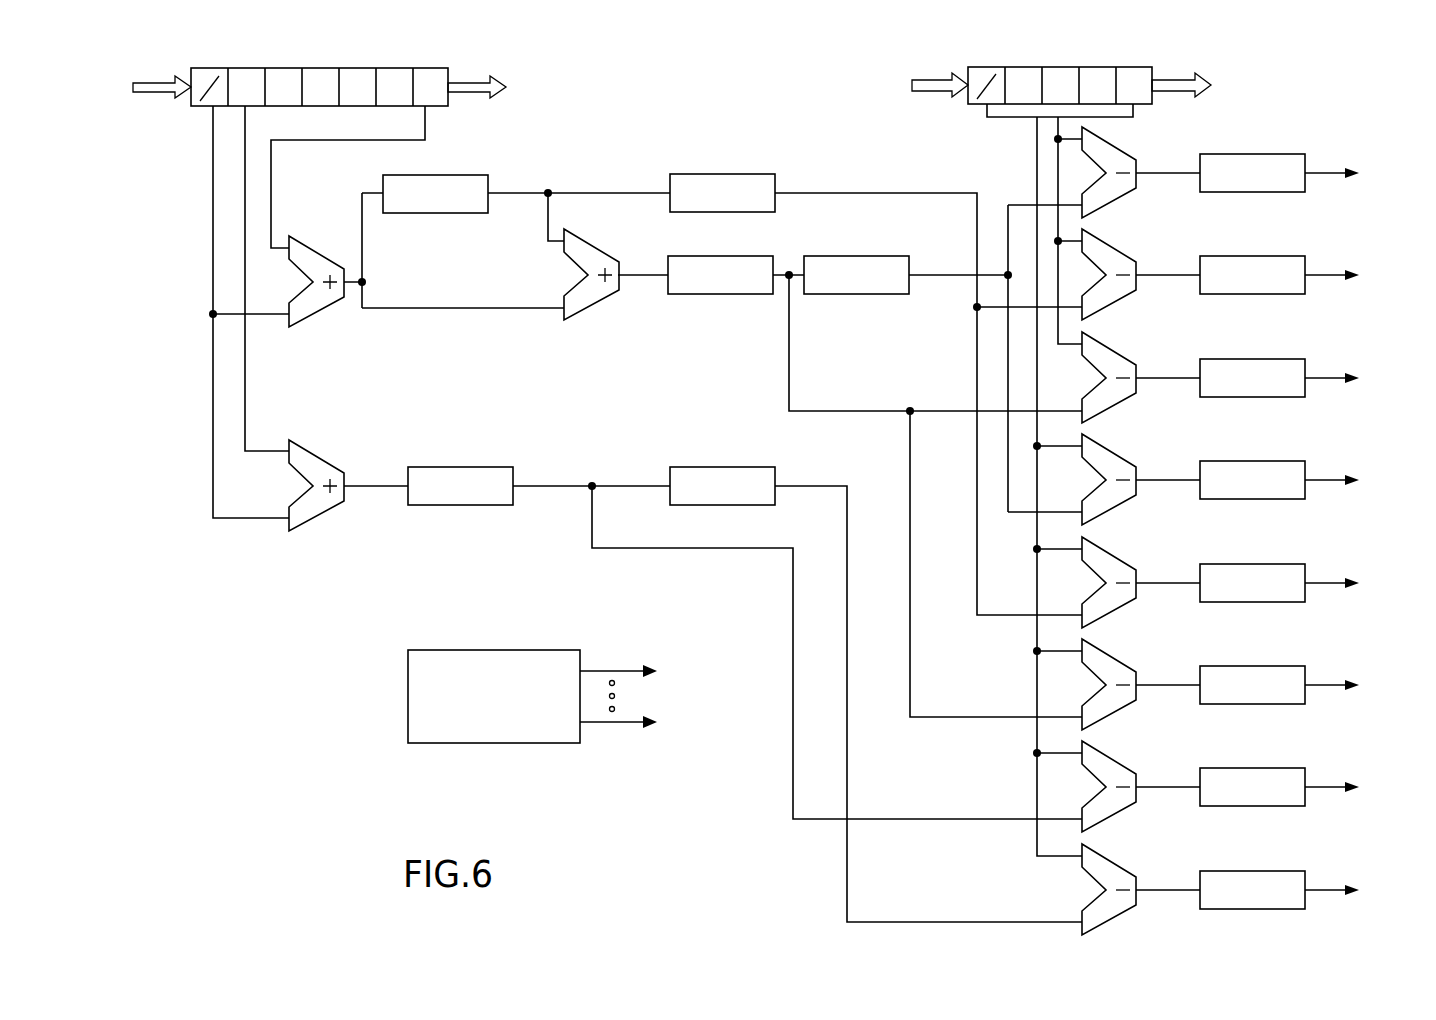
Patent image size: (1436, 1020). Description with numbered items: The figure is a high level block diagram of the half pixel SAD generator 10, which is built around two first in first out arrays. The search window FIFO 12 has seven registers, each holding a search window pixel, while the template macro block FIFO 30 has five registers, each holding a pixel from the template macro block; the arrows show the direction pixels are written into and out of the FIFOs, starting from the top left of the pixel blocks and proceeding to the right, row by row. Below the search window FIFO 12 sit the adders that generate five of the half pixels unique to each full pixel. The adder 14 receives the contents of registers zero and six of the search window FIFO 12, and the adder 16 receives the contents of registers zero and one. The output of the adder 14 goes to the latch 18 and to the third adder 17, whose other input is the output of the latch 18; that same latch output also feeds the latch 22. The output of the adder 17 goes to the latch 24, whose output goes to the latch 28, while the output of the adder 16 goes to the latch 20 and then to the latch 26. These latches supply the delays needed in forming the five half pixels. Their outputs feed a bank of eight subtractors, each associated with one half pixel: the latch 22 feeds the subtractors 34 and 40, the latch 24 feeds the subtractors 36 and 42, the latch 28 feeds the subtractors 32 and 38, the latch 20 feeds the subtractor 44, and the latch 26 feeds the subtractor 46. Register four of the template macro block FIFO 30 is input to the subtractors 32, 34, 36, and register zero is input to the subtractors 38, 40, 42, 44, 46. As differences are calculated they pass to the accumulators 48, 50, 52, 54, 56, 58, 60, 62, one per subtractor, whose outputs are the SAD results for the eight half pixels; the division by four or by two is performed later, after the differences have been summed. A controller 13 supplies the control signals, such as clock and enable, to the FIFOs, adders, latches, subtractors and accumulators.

The half pixel SAD generator 10 is at (310, 640).
The search window FIFO 12 is at (441, 107).
The controller 13 is at (490, 650).
The adder 14 is at (316, 305).
The adder 16 is at (316, 509).
The third adder 17 is at (597, 303).
The latch 18 is at (420, 213).
The latch 20 is at (490, 467).
The latch 22 is at (740, 174).
The latch 24 is at (722, 294).
The latch 26 is at (700, 467).
The latch 28 is at (850, 294).
The template macro block FIFO 30 is at (1145, 105).
The subtractor 32 is at (1120, 150).
The subtractor 34 is at (1120, 252).
The subtractor 36 is at (1120, 355).
The subtractor 38 is at (1120, 457).
The subtractor 40 is at (1120, 560).
The subtractor 42 is at (1120, 662).
The subtractor 44 is at (1120, 764).
The subtractor 46 is at (1120, 867).
The accumulator 48 is at (1268, 154).
The accumulator 50 is at (1268, 256).
The accumulator 52 is at (1268, 359).
The accumulator 54 is at (1268, 461).
The accumulator 56 is at (1268, 564).
The accumulator 58 is at (1268, 666).
The accumulator 60 is at (1268, 768).
The accumulator 62 is at (1268, 871).